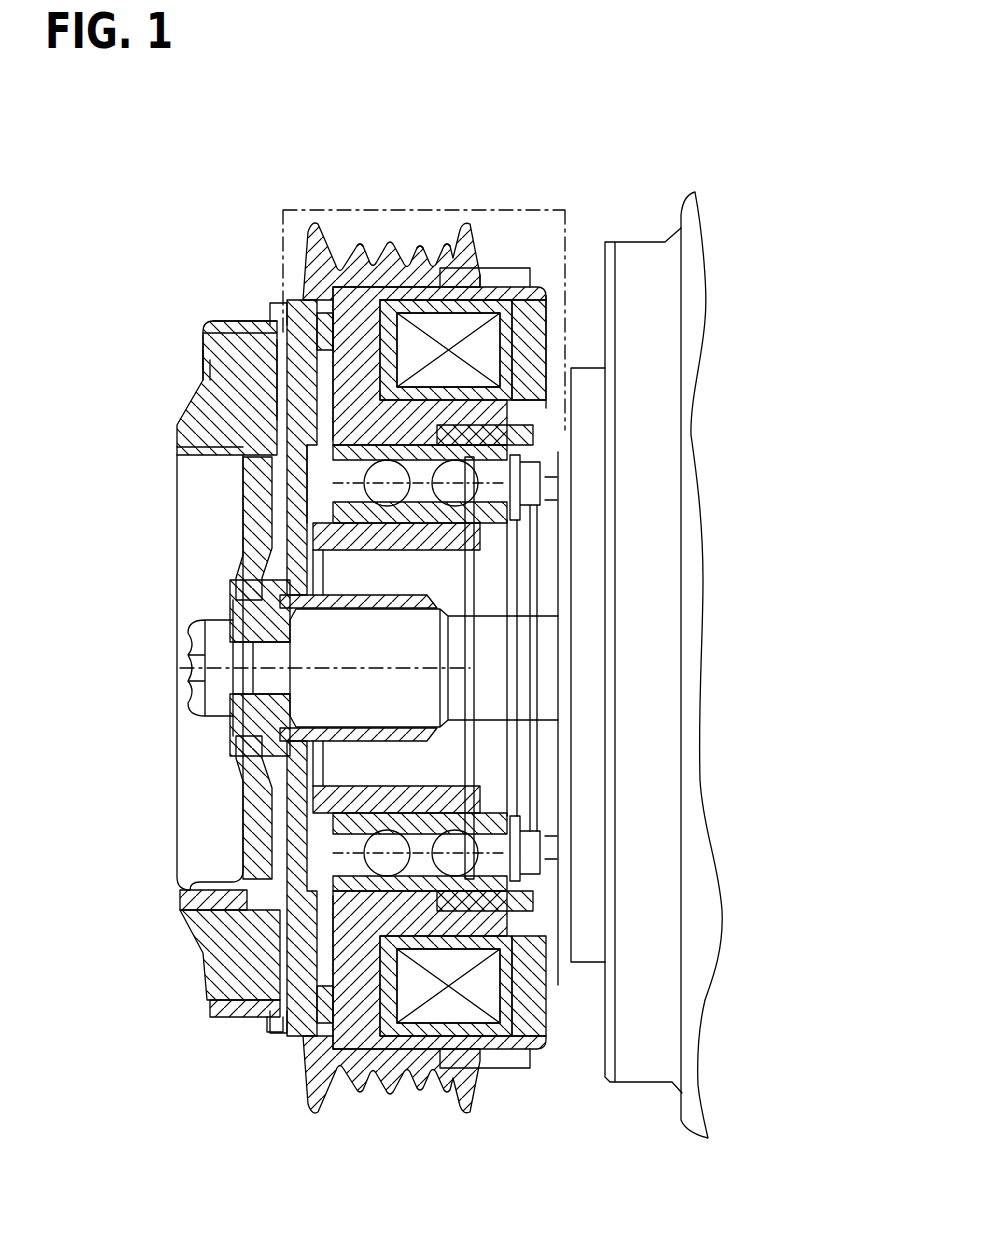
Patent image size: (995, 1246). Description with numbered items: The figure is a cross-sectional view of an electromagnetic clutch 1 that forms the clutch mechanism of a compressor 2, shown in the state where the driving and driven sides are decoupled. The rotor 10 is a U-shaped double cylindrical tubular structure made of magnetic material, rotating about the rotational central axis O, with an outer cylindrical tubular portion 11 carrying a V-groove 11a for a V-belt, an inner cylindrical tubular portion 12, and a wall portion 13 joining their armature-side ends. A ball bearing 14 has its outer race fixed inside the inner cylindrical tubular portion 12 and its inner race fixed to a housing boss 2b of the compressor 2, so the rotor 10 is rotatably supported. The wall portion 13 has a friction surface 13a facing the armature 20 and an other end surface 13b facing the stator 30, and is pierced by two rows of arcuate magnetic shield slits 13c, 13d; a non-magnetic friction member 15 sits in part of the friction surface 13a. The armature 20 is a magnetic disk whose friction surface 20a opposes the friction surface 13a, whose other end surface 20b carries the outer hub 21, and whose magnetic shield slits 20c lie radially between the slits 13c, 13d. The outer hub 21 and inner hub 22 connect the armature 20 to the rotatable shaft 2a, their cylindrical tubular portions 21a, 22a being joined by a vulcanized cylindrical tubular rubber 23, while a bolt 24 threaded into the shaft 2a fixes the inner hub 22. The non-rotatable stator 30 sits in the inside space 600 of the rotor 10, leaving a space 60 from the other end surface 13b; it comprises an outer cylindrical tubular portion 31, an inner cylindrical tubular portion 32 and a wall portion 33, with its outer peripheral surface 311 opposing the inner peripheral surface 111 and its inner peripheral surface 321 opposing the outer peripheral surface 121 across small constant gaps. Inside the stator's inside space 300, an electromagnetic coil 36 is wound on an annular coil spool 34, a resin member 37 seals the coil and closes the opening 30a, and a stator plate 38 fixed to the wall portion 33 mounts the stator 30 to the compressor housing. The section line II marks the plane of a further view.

The electromagnetic clutch 1 is at (240, 213).
The compressor 2 is at (688, 200).
The rotatable shaft 2a is at (412, 668).
The housing boss 2b is at (445, 557).
The rotor 10 is at (430, 258).
The outer cylindrical tubular portion 11 is at (402, 252).
The V-groove 11a is at (386, 255).
The inner peripheral surface 111 is at (442, 258).
The inner cylindrical tubular portion 12 is at (320, 470).
The outer peripheral surface 121 is at (482, 428).
The wall portion 13 is at (300, 420).
The friction surface 13a is at (318, 332).
The other end surface 13b is at (358, 330).
The magnetic shield slits 13c is at (293, 440).
The magnetic shield slits 13d is at (294, 376).
The ball bearing 14 is at (460, 490).
The friction member 15 is at (280, 356).
The armature 20 is at (272, 322).
The friction surface 20a is at (333, 333).
The other end surface 20b is at (272, 323).
The magnetic shield slits 20c is at (262, 420).
The outer hub 21 is at (262, 350).
The cylindrical tubular portion 21a is at (272, 1020).
The inner hub 22 is at (255, 572).
The cylindrical tubular portion 22a is at (215, 893).
The cylindrical tubular rubber 23 is at (228, 955).
The bolt 24 is at (200, 652).
The stator 30 is at (541, 290).
The opening 30a is at (340, 460).
The inside space 300 is at (497, 270).
The outer cylindrical tubular portion 31 is at (510, 278).
The outer peripheral surface 311 is at (462, 258).
The inner cylindrical tubular portion 32 is at (527, 400).
The inner peripheral surface 321 is at (520, 445).
The wall portion 33 is at (452, 333).
The coil spool 34 is at (505, 386).
The electromagnetic coil 36 is at (556, 308).
The resin member 37 is at (473, 325).
The stator plate 38 is at (512, 468).
The space 60 is at (258, 408).
The inside space 600 is at (262, 395).
The rotational central axis O is at (278, 672).
The section line II is at (568, 206).